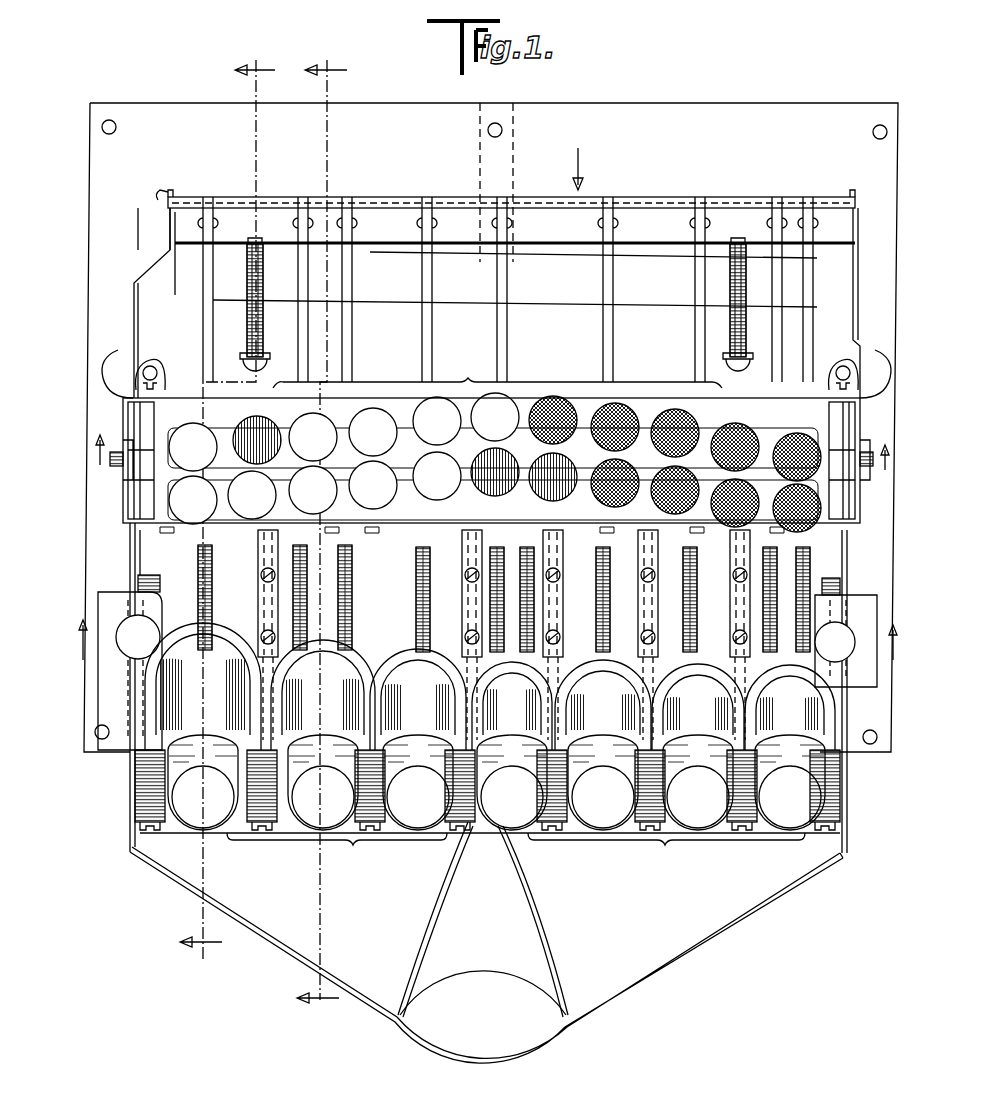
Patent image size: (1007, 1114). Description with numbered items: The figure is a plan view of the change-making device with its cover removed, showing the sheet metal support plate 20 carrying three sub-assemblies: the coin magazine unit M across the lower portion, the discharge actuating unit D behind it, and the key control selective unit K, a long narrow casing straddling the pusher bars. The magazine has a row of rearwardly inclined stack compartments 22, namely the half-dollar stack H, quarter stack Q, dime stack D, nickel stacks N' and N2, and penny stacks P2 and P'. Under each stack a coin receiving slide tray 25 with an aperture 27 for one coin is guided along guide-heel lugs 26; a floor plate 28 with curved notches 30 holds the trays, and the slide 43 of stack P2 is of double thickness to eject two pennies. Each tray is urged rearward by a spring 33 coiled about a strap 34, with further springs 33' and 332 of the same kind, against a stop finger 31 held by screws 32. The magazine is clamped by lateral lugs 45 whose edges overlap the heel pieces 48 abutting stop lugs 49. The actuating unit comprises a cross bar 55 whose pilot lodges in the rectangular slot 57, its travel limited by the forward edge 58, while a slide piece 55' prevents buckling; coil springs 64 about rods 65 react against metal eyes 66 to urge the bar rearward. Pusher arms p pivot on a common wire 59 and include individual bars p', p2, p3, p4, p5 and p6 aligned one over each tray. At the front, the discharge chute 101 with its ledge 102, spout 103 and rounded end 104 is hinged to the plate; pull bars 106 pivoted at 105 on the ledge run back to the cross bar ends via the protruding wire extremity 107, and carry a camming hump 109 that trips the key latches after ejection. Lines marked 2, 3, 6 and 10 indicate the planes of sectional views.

The support plate 20 is at (137, 122).
The protruding extremity of wire 107 is at (162, 195).
The common wire 59 is at (277, 197).
The cross bar 55 is at (497, 280).
The slide piece 55' is at (470, 182).
The discharge actuating unit D is at (530, 435).
The coil springs 64 is at (247, 282).
The rods 65 is at (248, 318).
The metal eyes 66 is at (272, 358).
The rectangular slot 57 is at (412, 250).
The forward edge of slot 58 is at (558, 320).
The pusher bar p' is at (193, 289).
The pusher bar p2 is at (345, 352).
The pusher arms p is at (424, 289).
The pusher bar p3 is at (425, 345).
The pusher bar p4 is at (615, 340).
The pusher bar p5 is at (697, 355).
The rod p6 is at (775, 375).
The key control selective unit K is at (494, 441).
The camming hump 109 is at (114, 385).
The section arrow 6 is at (492, 460).
The stop lugs 49 is at (140, 577).
The pull bar 106 is at (140, 548).
The spring 33 is at (186, 597).
The stop finger 31 is at (262, 598).
The spring 33' is at (460, 635).
The spring 332 is at (548, 603).
The straps 34 is at (203, 700).
The screws 32 is at (262, 640).
The guide-heel lugs 26 is at (380, 670).
The half-dollar stack H is at (203, 686).
The quarter stack receptacle Q is at (323, 695).
The nickel stack N' is at (418, 699).
The coin receiving slide ejector tray 25 is at (450, 635).
The nickel stack N2 is at (603, 705).
The penny stack P2 is at (698, 707).
The penny stack P' is at (790, 707).
The section arrow 10 is at (490, 661).
The clamping lugs 45 is at (110, 690).
The pull bar pivot 105 is at (122, 740).
The floor plate 28 is at (338, 780).
The curved notches 30 is at (428, 768).
The stack compartments 22 is at (620, 670).
The heel pieces 48 is at (825, 745).
The aperture 27 is at (203, 808).
The coin magazine unit M is at (516, 854).
The double thickness slide 43 is at (705, 815).
The coin discharge chute 101 is at (392, 1000).
The ledge 102 is at (630, 985).
The discharge spout 103 is at (478, 1035).
The forward rounded end 104 is at (536, 1050).
The section line 2 is at (227, 511).
The section line 3 is at (322, 537).